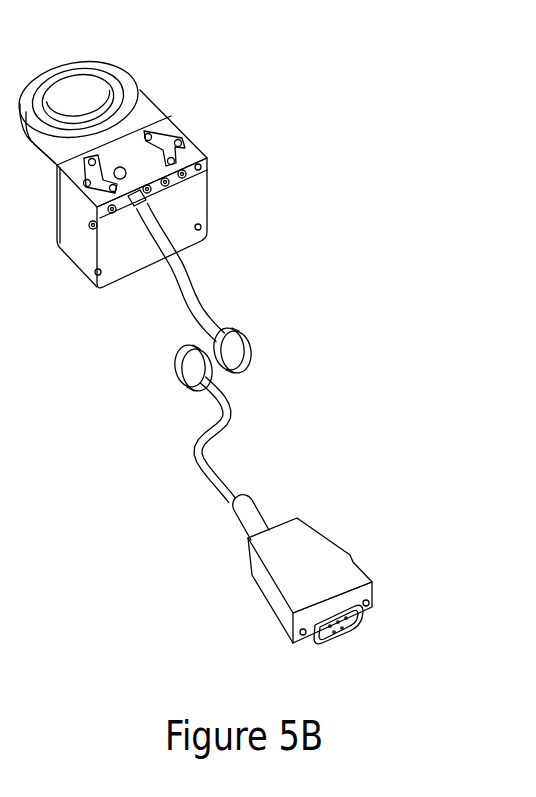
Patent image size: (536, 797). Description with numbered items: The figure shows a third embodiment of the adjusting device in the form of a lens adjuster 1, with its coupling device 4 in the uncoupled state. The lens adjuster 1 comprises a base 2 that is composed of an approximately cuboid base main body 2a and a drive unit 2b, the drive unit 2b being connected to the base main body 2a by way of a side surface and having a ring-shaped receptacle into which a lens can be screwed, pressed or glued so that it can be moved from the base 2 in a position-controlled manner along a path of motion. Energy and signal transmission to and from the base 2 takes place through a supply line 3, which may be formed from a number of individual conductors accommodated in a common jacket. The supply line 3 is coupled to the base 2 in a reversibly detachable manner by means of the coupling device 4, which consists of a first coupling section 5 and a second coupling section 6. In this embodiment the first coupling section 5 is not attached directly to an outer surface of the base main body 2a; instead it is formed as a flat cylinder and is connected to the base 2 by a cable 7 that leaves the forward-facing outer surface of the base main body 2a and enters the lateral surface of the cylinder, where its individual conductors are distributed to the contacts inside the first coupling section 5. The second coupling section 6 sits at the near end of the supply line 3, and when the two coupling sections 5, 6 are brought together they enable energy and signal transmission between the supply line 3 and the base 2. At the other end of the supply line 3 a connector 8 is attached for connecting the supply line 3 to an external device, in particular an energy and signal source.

The lens adjuster 1 is at (201, 172).
The base 2 is at (201, 170).
The base main body 2a is at (143, 167).
The drive unit 2b is at (143, 117).
The supply line 3 is at (202, 440).
The coupling device 4 is at (225, 365).
The first coupling section 5 is at (242, 348).
The second coupling section 6 is at (190, 376).
The cable 7 is at (193, 285).
The connector 8 is at (287, 557).